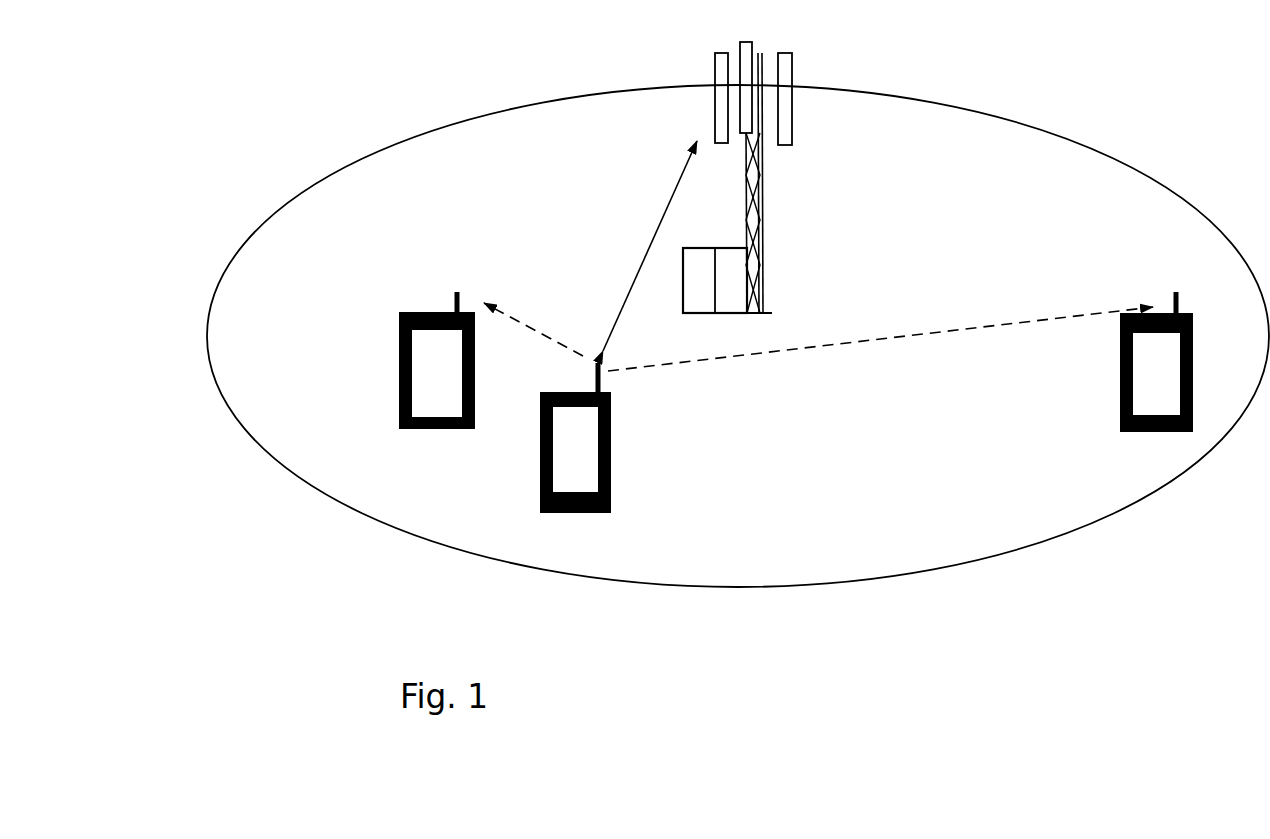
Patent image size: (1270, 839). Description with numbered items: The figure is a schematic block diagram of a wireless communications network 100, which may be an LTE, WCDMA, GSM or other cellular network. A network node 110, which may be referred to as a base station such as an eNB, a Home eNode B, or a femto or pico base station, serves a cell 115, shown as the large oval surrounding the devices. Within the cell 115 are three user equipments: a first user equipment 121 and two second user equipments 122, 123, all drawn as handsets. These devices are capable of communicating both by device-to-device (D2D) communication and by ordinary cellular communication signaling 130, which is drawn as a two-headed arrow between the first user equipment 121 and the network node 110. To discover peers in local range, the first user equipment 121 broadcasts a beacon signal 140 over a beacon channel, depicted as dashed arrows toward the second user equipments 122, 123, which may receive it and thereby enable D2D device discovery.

The communications network 100 is at (1078, 629).
The network node 110 is at (763, 269).
The cell 115 is at (338, 500).
The first user equipment 121 is at (540, 459).
The second user equipment 122 is at (1120, 423).
The second user equipment 123 is at (399, 375).
The cellular communication signaling 130 is at (675, 190).
The beacon signal 140 is at (576, 351).